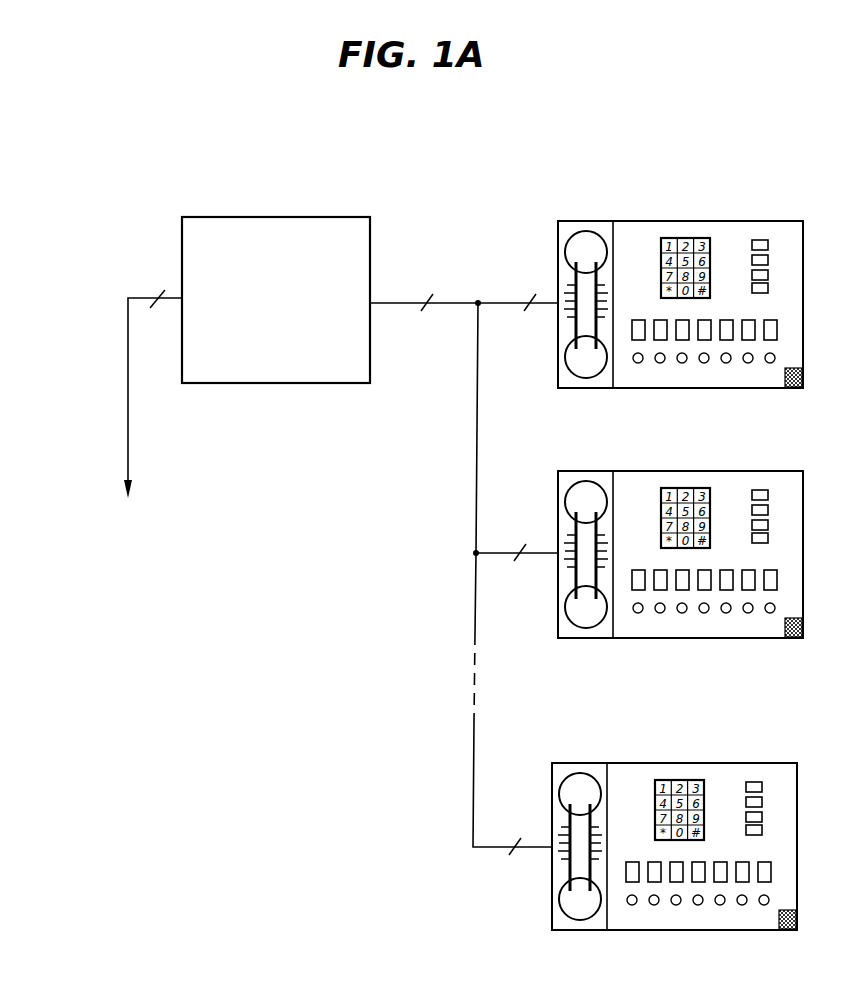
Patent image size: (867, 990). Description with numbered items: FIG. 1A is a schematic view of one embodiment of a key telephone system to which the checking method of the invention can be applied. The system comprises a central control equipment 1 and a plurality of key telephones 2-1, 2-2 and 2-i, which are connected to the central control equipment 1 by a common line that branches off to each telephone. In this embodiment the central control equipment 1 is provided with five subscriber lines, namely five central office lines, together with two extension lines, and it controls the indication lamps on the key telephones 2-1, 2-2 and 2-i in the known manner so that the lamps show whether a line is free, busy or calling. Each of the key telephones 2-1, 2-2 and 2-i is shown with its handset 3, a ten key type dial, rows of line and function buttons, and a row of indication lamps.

The central control equipment 1 is at (275, 217).
The telephone set (first) 2-1 is at (640, 221).
The telephone set (second) 2-2 is at (627, 471).
The telephone set (i-th) 2-i is at (617, 763).
The lines L1~L5 3 is at (128, 470).